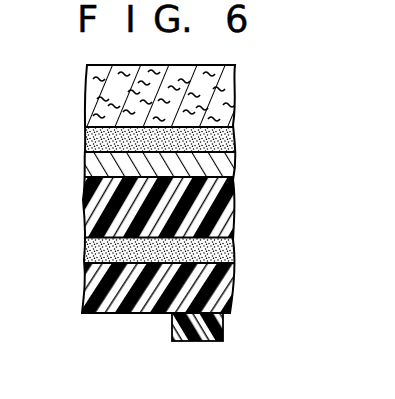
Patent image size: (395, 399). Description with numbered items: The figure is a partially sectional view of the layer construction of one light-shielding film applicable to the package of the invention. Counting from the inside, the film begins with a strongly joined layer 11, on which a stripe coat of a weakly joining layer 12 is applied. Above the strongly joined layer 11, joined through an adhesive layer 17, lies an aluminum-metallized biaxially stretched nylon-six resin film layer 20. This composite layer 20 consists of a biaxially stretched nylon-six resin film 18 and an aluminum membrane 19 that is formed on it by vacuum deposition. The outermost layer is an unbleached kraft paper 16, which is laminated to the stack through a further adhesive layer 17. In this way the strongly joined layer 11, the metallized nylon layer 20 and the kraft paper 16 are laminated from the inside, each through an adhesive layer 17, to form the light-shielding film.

The unbleached kraft paper 16 is at (236, 93).
The adhesive layer 17 is at (236, 137).
The aluminum membrane 19 is at (236, 173).
The biaxially stretched nylon 6 resin film 18 is at (189, 207).
The aluminum-metallized biaxially stretched nylon 6 resin film layer 20 is at (217, 193).
The strongly joined layer 11 is at (234, 290).
The weakly joining layer 12 is at (224, 330).